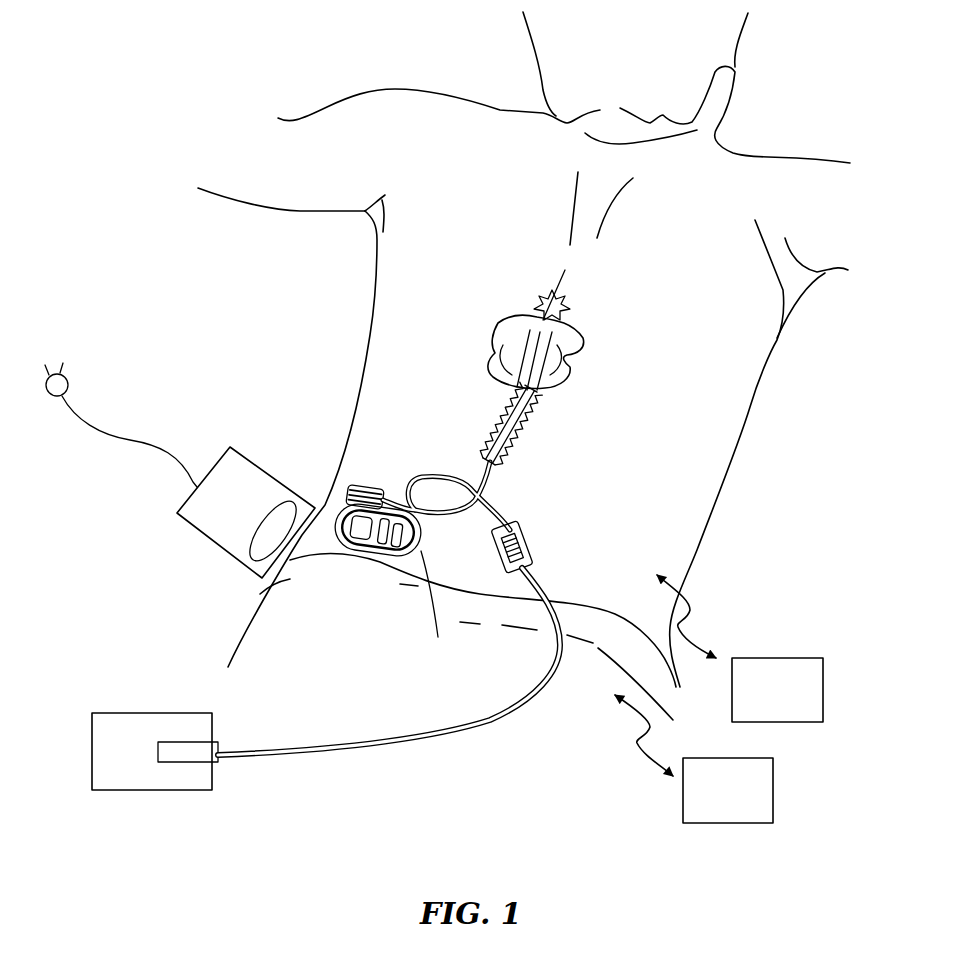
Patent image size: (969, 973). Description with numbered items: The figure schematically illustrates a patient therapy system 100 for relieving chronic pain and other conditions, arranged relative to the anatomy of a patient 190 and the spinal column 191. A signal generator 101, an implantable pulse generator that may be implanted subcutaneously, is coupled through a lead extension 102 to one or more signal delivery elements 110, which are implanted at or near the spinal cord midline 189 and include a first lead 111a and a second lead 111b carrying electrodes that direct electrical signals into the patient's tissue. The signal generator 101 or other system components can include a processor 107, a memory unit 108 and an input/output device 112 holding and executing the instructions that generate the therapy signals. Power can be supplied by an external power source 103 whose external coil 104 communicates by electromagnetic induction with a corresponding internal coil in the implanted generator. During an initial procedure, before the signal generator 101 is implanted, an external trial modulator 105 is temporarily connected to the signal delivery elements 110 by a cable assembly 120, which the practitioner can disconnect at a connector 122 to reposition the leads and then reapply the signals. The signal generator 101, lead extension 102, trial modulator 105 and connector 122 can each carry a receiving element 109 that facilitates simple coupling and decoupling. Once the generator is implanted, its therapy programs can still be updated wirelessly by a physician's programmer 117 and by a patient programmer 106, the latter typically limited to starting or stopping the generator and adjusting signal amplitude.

The patient therapy system 100 is at (188, 358).
The signal generator 101 is at (423, 528).
The lead extension 102 is at (452, 472).
The external power source 103 is at (245, 453).
The external coil 104 is at (233, 556).
The trial modulator 105 is at (140, 713).
The patient programmer 106 is at (823, 688).
The processor 107 is at (357, 557).
The memory unit 108 is at (407, 560).
The receiving element 109 is at (508, 520).
The signal delivery element 110 is at (493, 314).
The first lead 111a is at (520, 367).
The second lead 111b is at (547, 362).
The input/output device 112 is at (442, 609).
The physician's programmer 117 is at (773, 790).
The cable assembly 120 is at (463, 741).
The connector 122 is at (527, 540).
The spinal cord midline 189 is at (570, 270).
The patient 190 is at (717, 472).
The spinal column 191 is at (542, 439).